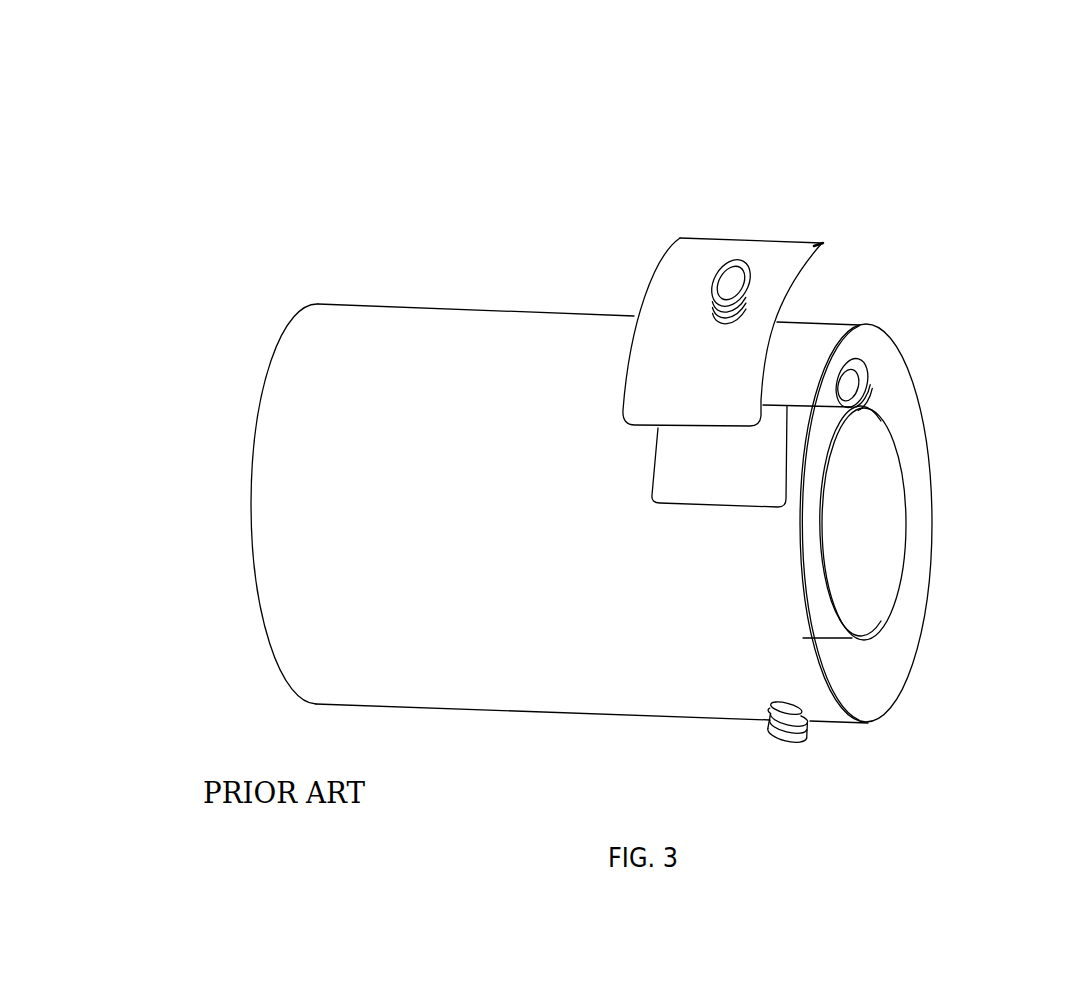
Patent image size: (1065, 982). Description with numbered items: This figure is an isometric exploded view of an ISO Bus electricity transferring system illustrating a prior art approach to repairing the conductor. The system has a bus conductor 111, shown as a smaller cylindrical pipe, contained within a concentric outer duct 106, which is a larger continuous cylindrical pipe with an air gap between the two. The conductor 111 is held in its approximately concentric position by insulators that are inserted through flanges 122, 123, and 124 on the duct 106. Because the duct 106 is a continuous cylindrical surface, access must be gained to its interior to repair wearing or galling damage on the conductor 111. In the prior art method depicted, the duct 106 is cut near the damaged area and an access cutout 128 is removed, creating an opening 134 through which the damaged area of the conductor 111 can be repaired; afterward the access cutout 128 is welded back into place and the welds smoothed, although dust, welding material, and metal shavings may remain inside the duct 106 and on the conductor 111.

The duct 106 is at (425, 307).
The conductor 111 is at (898, 461).
The flange 122 is at (750, 277).
The flange 123 is at (810, 722).
The flange 124 is at (864, 362).
The access cutout 128 is at (678, 237).
The opening 134 is at (790, 382).